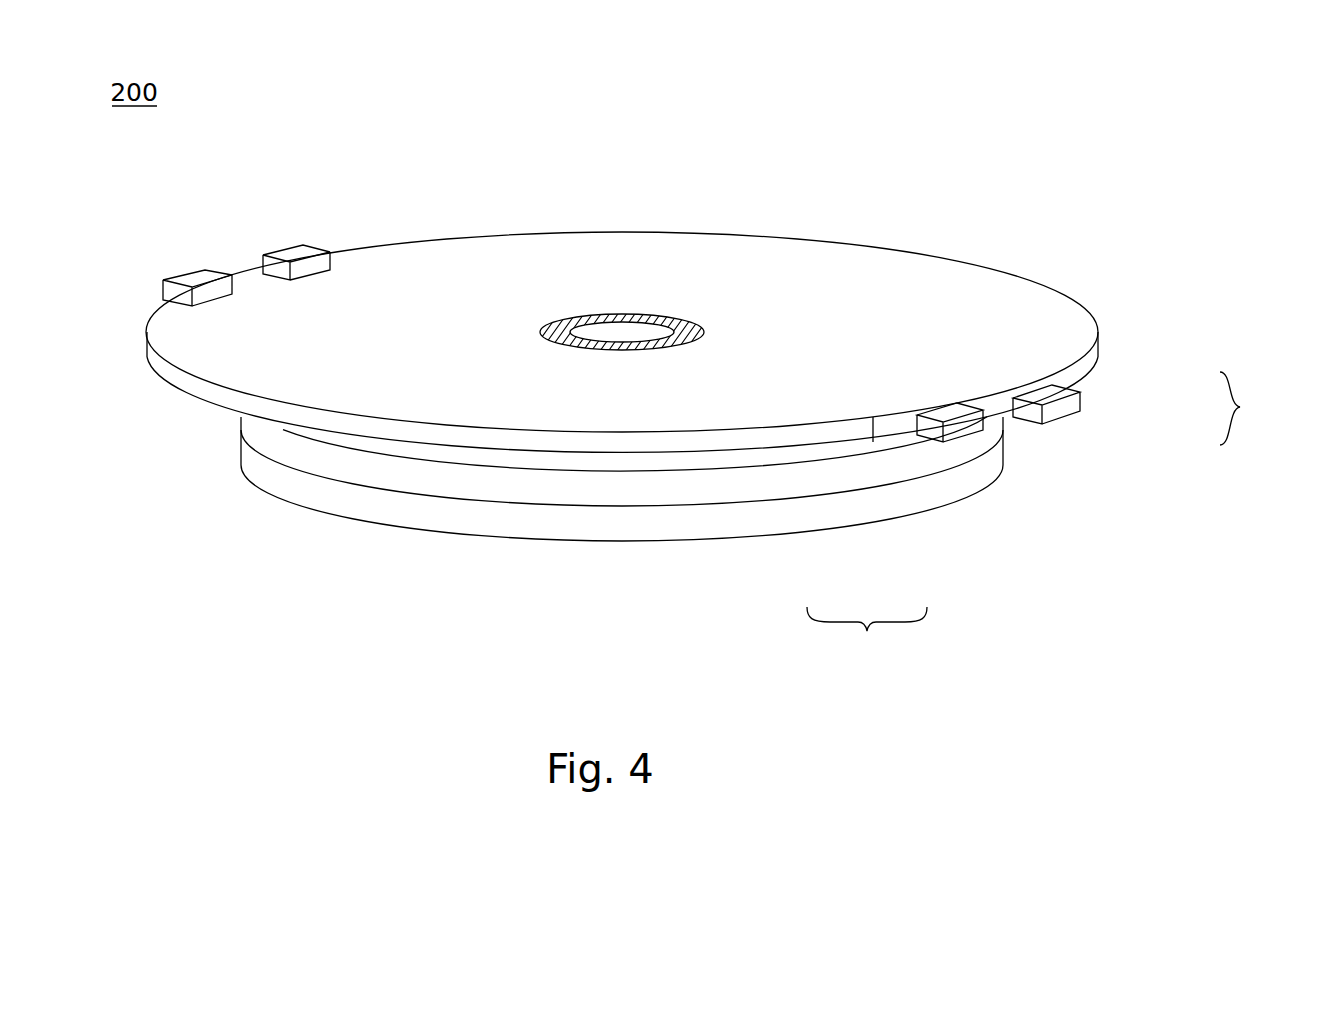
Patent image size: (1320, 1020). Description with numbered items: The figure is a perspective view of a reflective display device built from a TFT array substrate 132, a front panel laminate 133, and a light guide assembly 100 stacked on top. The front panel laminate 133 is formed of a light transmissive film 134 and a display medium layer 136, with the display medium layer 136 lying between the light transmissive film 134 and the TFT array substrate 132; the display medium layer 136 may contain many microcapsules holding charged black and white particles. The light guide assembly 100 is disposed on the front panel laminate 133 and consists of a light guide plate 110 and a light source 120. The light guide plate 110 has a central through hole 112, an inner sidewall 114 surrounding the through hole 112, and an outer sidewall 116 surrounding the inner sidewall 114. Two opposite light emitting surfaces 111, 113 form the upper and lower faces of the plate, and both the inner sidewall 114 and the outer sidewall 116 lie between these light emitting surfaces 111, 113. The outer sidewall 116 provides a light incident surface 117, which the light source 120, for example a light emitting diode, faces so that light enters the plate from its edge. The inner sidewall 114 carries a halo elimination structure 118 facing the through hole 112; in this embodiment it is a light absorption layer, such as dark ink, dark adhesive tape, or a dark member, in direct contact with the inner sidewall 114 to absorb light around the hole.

The light guide assembly 100 is at (1258, 408).
The light guide plate 110 is at (1063, 347).
The light emitting surface 111 is at (458, 271).
The through hole 112 is at (628, 323).
The inner sidewall 114 is at (672, 313).
The halo elimination structure 118 is at (571, 325).
The light incident surface 117 is at (987, 392).
The light source 120 is at (1067, 403).
The light emitting surface 113 is at (585, 458).
The outer sidewall 116 is at (687, 450).
The TFT array substrate 132 is at (950, 485).
The front panel laminate 133 is at (867, 635).
The light transmissive film 134 is at (830, 453).
The display medium layer 136 is at (892, 467).